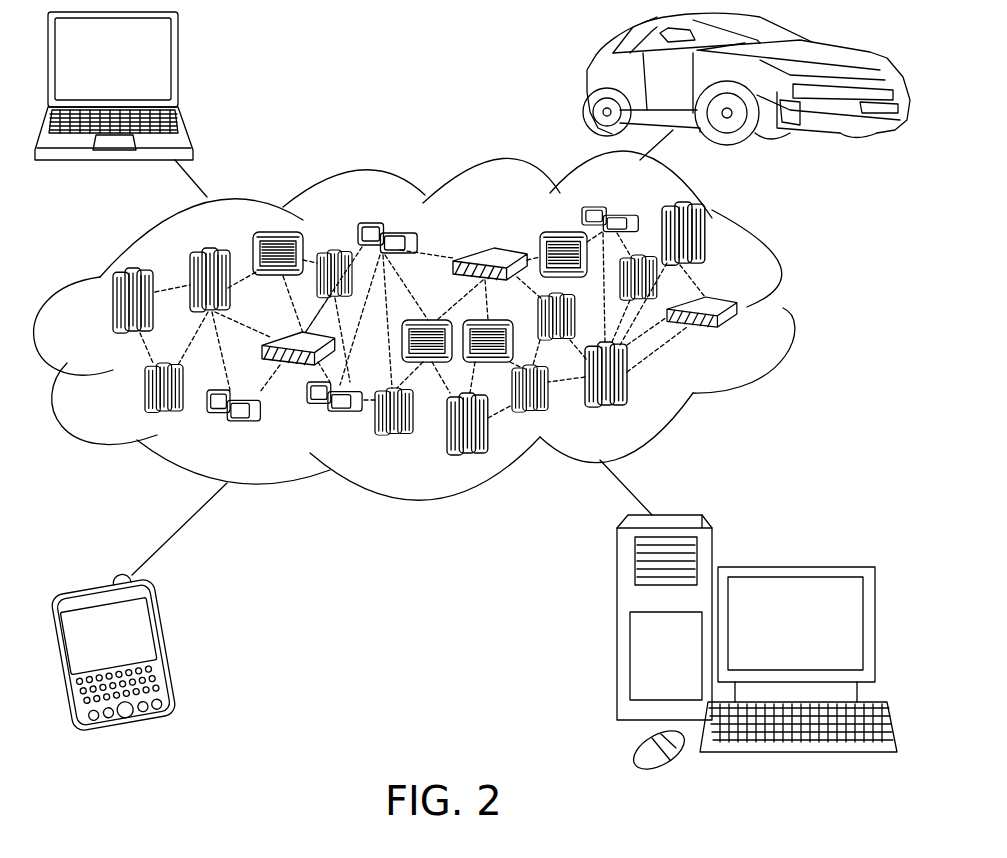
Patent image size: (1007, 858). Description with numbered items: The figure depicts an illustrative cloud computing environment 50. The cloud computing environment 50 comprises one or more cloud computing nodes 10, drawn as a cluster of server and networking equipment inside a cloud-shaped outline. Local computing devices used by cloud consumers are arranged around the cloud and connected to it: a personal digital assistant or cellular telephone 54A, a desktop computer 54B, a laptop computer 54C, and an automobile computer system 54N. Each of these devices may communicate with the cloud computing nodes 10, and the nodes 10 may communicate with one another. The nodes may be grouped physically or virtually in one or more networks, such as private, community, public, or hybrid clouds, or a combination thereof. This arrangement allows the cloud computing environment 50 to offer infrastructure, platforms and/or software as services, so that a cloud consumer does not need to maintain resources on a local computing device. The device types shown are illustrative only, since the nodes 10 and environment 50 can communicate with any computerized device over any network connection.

The cloud computing node 10 is at (741, 334).
The cloud computing environment 50 is at (790, 310).
The personal digital assistant or cellular telephone 54A is at (165, 648).
The desktop computer 54B is at (793, 567).
The laptop computer 54C is at (178, 67).
The automobile computer system 54N is at (590, 80).